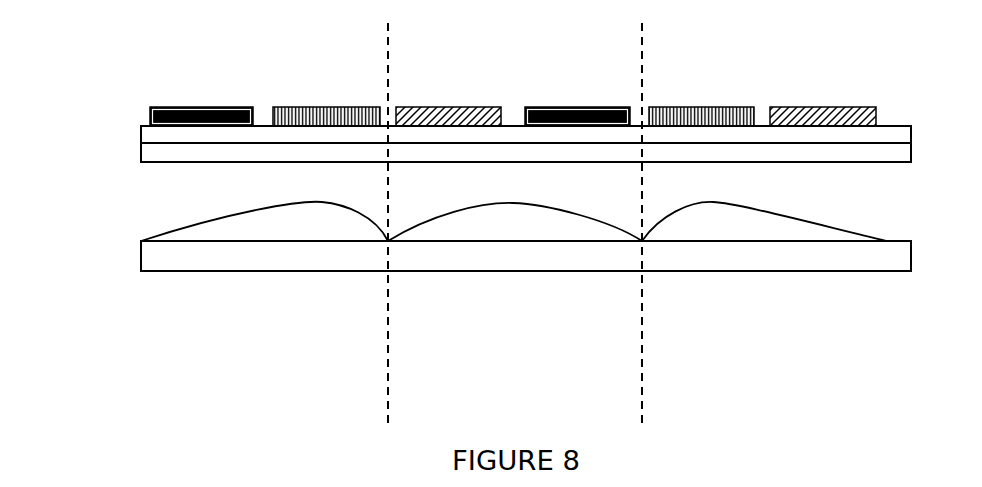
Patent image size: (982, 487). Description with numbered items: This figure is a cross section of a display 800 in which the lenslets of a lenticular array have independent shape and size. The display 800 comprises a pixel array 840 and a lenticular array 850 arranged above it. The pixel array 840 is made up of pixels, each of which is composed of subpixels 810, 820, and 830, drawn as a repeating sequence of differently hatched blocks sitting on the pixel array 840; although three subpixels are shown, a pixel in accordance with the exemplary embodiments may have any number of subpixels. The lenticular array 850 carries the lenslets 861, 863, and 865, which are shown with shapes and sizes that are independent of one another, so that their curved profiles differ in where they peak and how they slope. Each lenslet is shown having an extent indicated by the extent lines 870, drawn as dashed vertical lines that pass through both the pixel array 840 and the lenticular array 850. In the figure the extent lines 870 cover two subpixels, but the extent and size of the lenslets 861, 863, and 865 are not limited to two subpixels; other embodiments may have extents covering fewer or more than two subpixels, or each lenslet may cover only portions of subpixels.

The display 800 is at (168, 351).
The subpixel 810 is at (193, 107).
The subpixel 820 is at (374, 107).
The subpixel 830 is at (418, 107).
The pixel array 840 is at (141, 132).
The lenticular array 850 is at (141, 259).
The lenslet 861 is at (334, 236).
The lenslet 863 is at (531, 236).
The lenslet 865 is at (736, 232).
The extent lines 870 is at (642, 317).